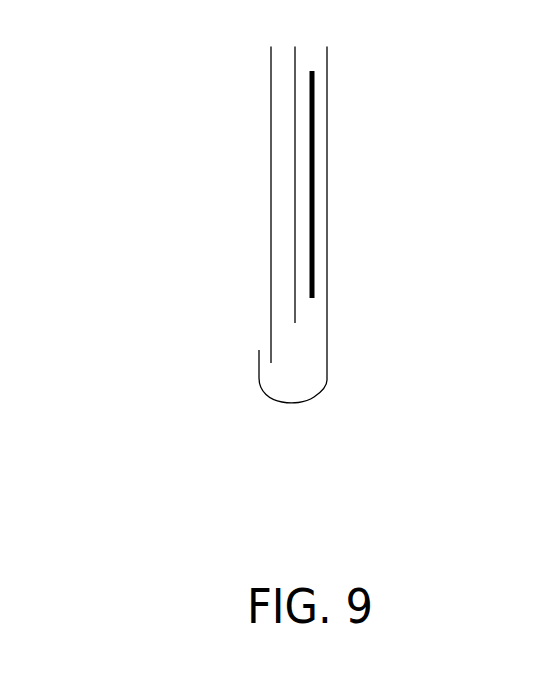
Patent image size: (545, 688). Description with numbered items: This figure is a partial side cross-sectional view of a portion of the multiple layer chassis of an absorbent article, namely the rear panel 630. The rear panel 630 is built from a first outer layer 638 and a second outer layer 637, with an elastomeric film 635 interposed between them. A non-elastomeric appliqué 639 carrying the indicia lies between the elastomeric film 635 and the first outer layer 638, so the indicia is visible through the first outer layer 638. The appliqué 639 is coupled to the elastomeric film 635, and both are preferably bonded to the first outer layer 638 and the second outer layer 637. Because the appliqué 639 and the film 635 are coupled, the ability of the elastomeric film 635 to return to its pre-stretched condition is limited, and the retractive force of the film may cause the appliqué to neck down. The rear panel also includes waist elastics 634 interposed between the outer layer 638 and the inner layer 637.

The rear panel 630 is at (398, 427).
The waist elastics 634 is at (297, 362).
The elastomeric film 635 is at (295, 180).
The second outer layer 637 is at (271, 115).
The first outer layer 638 is at (327, 90).
The non-elastomeric appliqué 639 is at (312, 277).